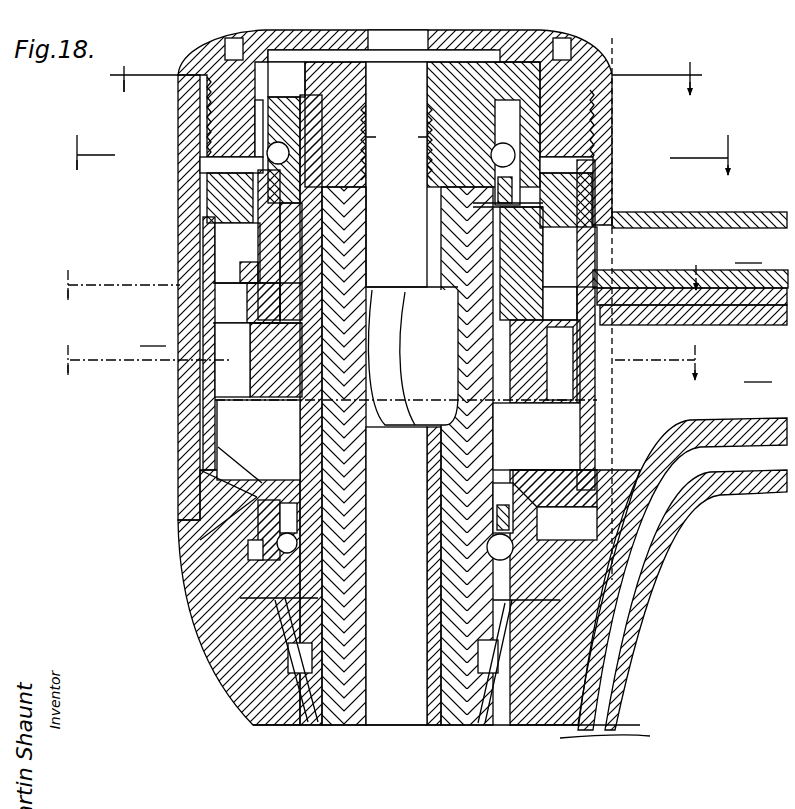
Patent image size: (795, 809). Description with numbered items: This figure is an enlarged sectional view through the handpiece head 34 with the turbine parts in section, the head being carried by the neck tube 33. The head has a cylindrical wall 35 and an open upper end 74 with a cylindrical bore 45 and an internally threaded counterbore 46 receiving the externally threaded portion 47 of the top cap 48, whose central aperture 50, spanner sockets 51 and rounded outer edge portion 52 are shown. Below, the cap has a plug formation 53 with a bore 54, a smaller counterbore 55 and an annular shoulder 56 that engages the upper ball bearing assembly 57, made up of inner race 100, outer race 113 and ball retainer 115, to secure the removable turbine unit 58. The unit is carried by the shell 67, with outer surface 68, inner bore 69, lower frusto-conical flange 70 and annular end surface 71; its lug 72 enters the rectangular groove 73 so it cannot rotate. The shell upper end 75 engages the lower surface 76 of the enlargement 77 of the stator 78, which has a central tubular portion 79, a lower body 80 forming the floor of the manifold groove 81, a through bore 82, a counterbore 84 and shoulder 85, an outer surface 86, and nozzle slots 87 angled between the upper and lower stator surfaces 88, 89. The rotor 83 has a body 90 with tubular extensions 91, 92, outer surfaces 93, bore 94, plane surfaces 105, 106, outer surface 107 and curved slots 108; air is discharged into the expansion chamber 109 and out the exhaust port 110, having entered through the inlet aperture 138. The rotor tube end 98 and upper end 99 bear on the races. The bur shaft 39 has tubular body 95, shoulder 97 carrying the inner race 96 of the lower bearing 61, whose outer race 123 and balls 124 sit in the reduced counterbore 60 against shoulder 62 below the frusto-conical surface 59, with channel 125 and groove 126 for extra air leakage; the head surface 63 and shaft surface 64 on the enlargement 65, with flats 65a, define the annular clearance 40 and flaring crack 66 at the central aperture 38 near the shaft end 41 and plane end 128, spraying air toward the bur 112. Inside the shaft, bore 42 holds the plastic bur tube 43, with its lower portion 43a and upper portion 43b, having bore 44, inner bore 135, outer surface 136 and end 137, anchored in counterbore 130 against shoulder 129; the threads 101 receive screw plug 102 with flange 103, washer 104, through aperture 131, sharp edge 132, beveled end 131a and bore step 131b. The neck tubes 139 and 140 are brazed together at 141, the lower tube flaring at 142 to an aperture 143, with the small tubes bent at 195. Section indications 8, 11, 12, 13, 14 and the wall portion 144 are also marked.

The section line 8- 8 is at (665, 68).
The section line 11- 11 is at (406, 70).
The section line 12- 12 is at (402, 150).
The section line 13- 13 is at (382, 275).
The section line 14- 14 is at (386, 371).
The neck tube 33 is at (700, 212).
The handpiece head 34 is at (614, 200).
The cylindrical wall 35 is at (178, 318).
The central circular aperture 38 is at (280, 680).
The bur shaft 39 is at (342, 468).
The annular clearance 40 is at (275, 723).
The end of bur shaft 41 is at (345, 697).
The cylindrical bore 42 is at (335, 450).
The plastic bur tube 43 is at (340, 295).
The spindle lower portion 43a is at (350, 442).
The spindle upper portion 43b is at (355, 262).
The cylindrical bore 44 is at (332, 600).
The cylindrical bore 45 is at (190, 340).
The internally threaded counterbore 46 is at (207, 90).
The externally threaded portion 47 is at (600, 112).
The top cap 48 is at (530, 31).
The central aperture 50 is at (382, 33).
The circular sockets 51 is at (232, 40).
The outer edge portion 52 is at (178, 73).
The plug formation 53 is at (214, 138).
The bore 54 is at (255, 118).
The smaller counterbore 55 is at (218, 52).
The annular shoulder 56 is at (215, 105).
The upper ball bearing assembly 57 is at (595, 130).
The removable turbine unit 58 is at (205, 268).
The frusto-conical inner surface 59 is at (186, 521).
The reduced counterbore 60 is at (260, 573).
The lower ball bearing assembly 61 is at (652, 548).
The annular shoulder 62 is at (262, 582).
The frusto-conical inner surface 63 is at (290, 655).
The external frusto-conical surface 64 is at (280, 700).
The enlargement 65 is at (263, 628).
The parallel flats 65a is at (600, 686).
The flaring crack 66 is at (256, 720).
The shell 67 is at (205, 400).
The outer cylindrical surface 68 is at (205, 415).
The inner cylindrical bore 69 is at (215, 432).
The frusto-conical flange 70 is at (235, 465).
The annular end surface 71 is at (198, 545).
The lug 72 is at (200, 236).
The rectangular groove 73 is at (200, 190).
The upper end 74 is at (196, 66).
The upper end of shell 75 is at (205, 210).
The lower surface 76 is at (213, 278).
The upper enlargement 77 is at (595, 176).
The stator 78 is at (522, 240).
The central tubular portion 79 is at (526, 266).
The lower cylindrical body 80 is at (547, 307).
The annular rectangular groove 81 is at (602, 262).
The through bore 82 is at (531, 281).
The rotor 83 is at (242, 370).
The cylindrical counterbore 84 is at (205, 163).
The annular shoulder 85 is at (240, 250).
The outer cylindrical surface 86 is at (602, 328).
The nozzle slots 87 is at (430, 300).
The upper stator surface 88 is at (378, 262).
The lower stator surface 89 is at (415, 330).
The rotor body 90 is at (492, 430).
The tubular extension 91 is at (256, 290).
The tubular extension 92 is at (300, 425).
The cylindrical outer surfaces 93 is at (268, 262).
The cylindrical bore 94 is at (536, 436).
The tubular body 95 is at (345, 497).
The inner race 96 is at (470, 526).
The annular shoulder 97 is at (440, 601).
The end surface 98 is at (539, 455).
The upper end 99 is at (440, 196).
The upper race 100 is at (500, 56).
The inner threads 101 is at (370, 122).
The screw plug 102 is at (328, 74).
The radial flange 103 is at (325, 42).
The metal washer 104 is at (466, 42).
The upper plane surface 105 is at (592, 357).
The lower plane surface 106 is at (553, 438).
The cylindrical outer surface 107 is at (592, 381).
The curved slot 108 is at (395, 378).
The lower expansion chamber 109 is at (180, 380).
The lateral exhaust port 110 is at (592, 406).
The bur 112 is at (385, 703).
The outer race 113 is at (612, 82).
The ball retainer 115 is at (509, 108).
The outer race 123 is at (542, 497).
The balls 124 is at (645, 650).
The channel 125 is at (650, 572).
The groove 126 is at (640, 614).
The plane end 128 is at (600, 733).
The annular shoulder 129 is at (360, 233).
The counterbore 130 is at (360, 216).
The through aperture 131 is at (424, 78).
The beveled end 131a is at (436, 165).
The bore step 131b is at (410, 142).
The sharp edge 132 is at (374, 168).
The inner cylindrical bore 135 is at (345, 636).
The outer cylindrical surface 136 is at (345, 652).
The end 137 is at (413, 700).
The rectangular aperture 138 is at (642, 272).
The upper D tube 139 is at (748, 256).
The lower tube 140 is at (758, 375).
The brazed flat sides 141 is at (658, 290).
The flare 142 is at (652, 445).
The aperture 143 is at (648, 470).
The wall 144 is at (606, 706).
The obtuse bend 195 is at (748, 468).